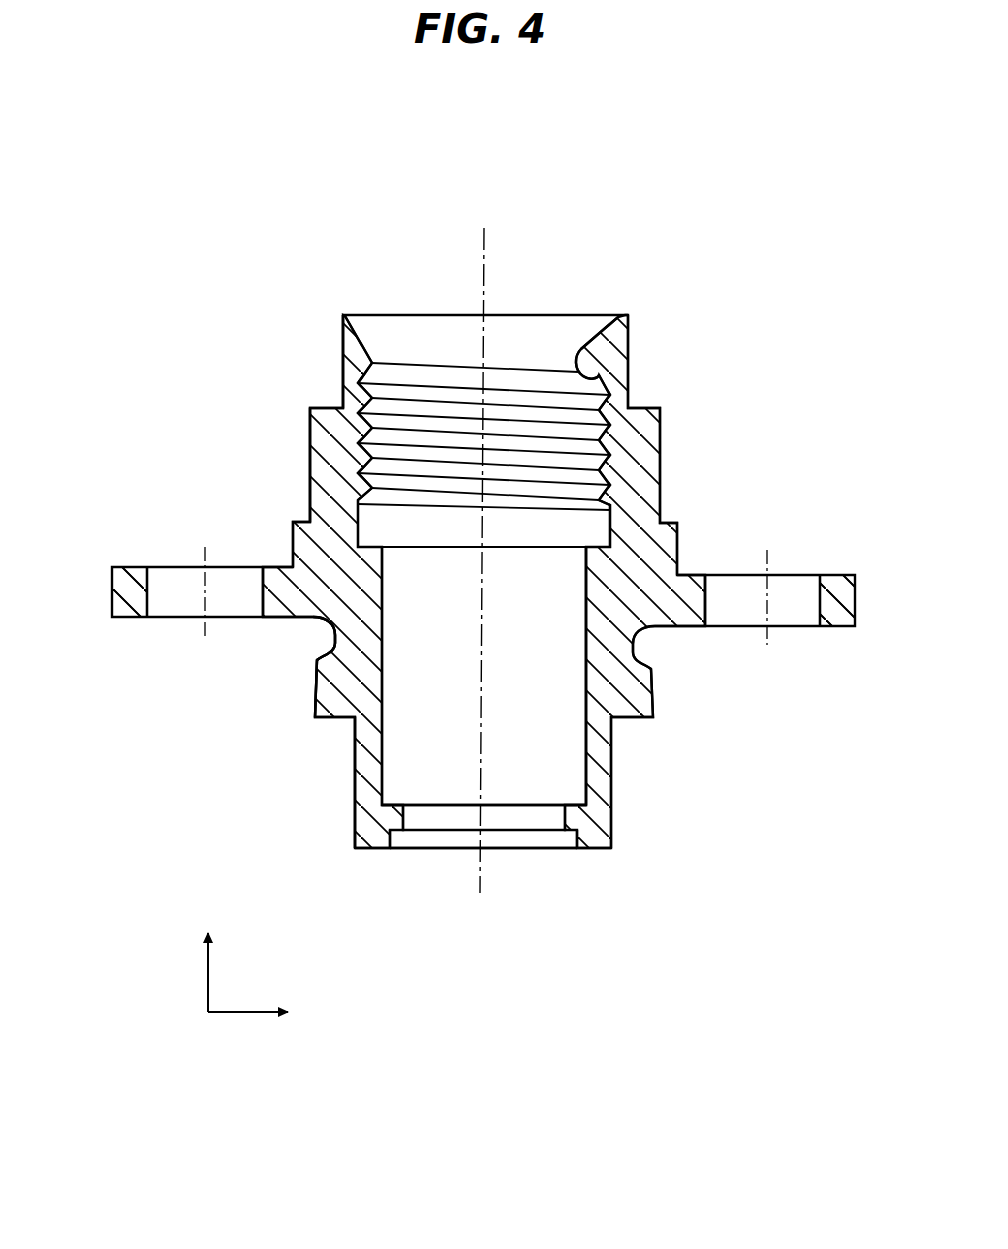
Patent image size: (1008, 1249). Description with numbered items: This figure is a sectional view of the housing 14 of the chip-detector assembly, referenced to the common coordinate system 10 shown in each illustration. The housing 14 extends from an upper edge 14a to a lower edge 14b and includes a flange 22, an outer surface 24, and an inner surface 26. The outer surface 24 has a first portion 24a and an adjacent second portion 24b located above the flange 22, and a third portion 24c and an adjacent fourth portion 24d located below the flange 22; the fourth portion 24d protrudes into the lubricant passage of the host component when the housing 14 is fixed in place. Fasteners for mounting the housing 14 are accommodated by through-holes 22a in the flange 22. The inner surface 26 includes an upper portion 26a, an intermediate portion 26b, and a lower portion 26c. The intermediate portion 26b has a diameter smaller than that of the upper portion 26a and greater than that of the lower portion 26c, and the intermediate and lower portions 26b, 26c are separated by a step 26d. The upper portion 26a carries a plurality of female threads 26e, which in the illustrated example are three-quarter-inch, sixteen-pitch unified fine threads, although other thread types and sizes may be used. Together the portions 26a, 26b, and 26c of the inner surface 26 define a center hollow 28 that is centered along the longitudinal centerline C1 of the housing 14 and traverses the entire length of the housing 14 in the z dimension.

The coordinate system 10 is at (228, 1012).
The housing 14 is at (704, 277).
The upper edge 14a is at (346, 315).
The lower edge 14b is at (377, 848).
The flange 22 is at (112, 588).
The through-holes 22a is at (178, 577).
The outer surface 24 is at (188, 368).
The first portion 24a is at (342, 333).
The second portion 24b is at (310, 453).
The third portion 24c is at (313, 668).
The fourth portion 24d is at (353, 755).
The inner surface 26 is at (523, 575).
The upper portion 26a is at (579, 349).
The intermediate portion 26b is at (583, 682).
The lower portion 26c is at (403, 817).
The step 26d is at (385, 802).
The threads 26e is at (500, 372).
The center hollow 28 is at (535, 782).
The longitudinal centerline C1 is at (480, 875).